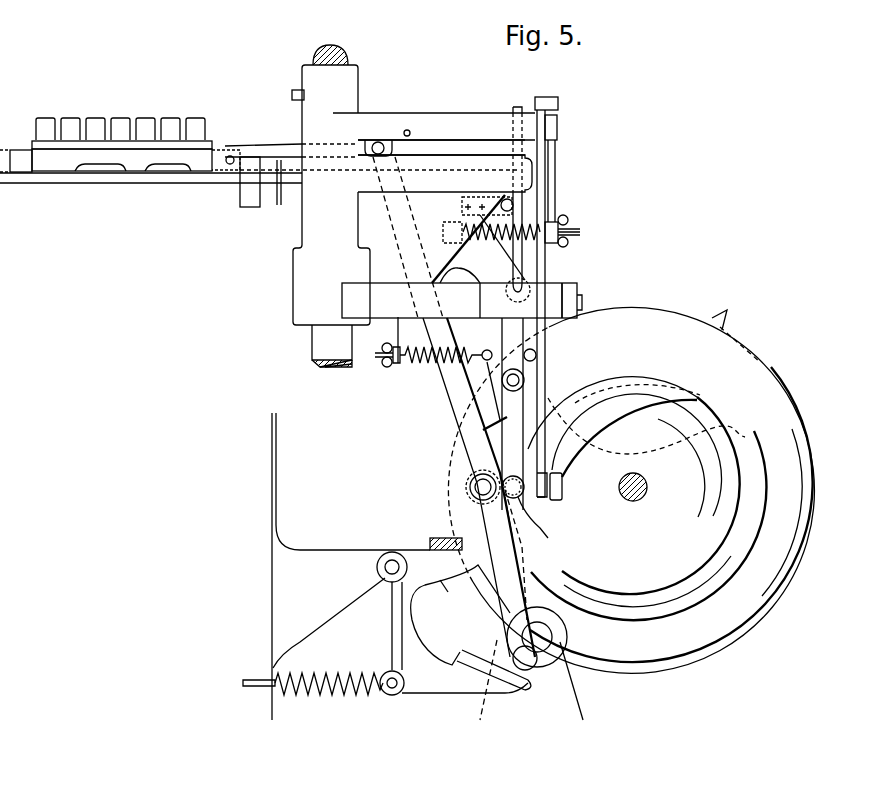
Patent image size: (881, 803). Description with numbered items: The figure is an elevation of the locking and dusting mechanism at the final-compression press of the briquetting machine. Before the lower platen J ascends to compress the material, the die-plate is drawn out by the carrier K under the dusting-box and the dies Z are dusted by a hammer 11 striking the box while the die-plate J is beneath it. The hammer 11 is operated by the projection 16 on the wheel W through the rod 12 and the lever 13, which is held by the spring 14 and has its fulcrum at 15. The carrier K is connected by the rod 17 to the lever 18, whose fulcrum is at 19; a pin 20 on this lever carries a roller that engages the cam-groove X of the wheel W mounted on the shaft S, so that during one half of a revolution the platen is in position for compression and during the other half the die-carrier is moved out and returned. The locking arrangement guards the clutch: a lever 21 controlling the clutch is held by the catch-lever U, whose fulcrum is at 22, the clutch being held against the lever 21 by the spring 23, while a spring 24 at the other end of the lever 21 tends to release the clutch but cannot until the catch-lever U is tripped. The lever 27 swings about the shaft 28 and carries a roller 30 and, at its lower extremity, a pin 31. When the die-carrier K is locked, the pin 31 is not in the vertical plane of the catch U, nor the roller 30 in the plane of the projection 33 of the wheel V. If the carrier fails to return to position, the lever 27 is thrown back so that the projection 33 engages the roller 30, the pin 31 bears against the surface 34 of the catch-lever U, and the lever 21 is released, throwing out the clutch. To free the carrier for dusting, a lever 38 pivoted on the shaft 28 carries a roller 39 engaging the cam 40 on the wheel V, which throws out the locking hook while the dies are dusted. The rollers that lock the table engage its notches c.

The lower platen J is at (92, 185).
The carrier K is at (45, 168).
The dies Z is at (170, 130).
The rod 17 is at (283, 143).
The lever 18 is at (445, 375).
The lever 27 is at (518, 412).
The hammer 11 is at (559, 102).
The lever 38 is at (548, 128).
The rod 12 is at (555, 178).
The roller 39 is at (562, 486).
The spring 14 is at (496, 236).
The fulcrum 15 is at (545, 300).
The shaft 28 is at (567, 300).
The lever 13 is at (490, 340).
The spring 24 is at (515, 378).
The roller 30 is at (512, 474).
The pin 20 is at (470, 490).
The projection 33 is at (532, 522).
The shaft S is at (648, 488).
The wheel W is at (631, 490).
The cam-groove X is at (671, 514).
The wheel V is at (647, 498).
The notches c is at (642, 459).
The cam 40 is at (570, 455).
The projection 16 is at (735, 327).
The catch-lever U is at (400, 566).
The lever 21 is at (440, 540).
The fulcrum 22 is at (392, 552).
The spring 23 is at (296, 693).
The surface 34 is at (507, 665).
The fulcrum 19 is at (540, 637).
The pin 31 is at (528, 665).